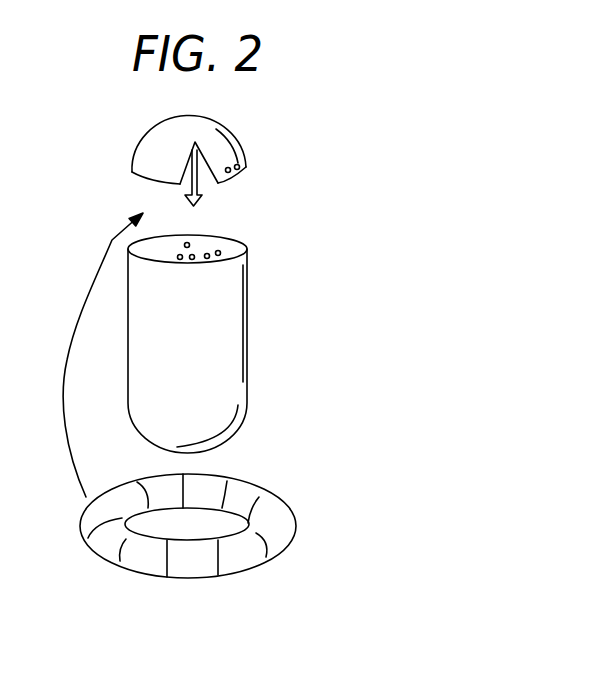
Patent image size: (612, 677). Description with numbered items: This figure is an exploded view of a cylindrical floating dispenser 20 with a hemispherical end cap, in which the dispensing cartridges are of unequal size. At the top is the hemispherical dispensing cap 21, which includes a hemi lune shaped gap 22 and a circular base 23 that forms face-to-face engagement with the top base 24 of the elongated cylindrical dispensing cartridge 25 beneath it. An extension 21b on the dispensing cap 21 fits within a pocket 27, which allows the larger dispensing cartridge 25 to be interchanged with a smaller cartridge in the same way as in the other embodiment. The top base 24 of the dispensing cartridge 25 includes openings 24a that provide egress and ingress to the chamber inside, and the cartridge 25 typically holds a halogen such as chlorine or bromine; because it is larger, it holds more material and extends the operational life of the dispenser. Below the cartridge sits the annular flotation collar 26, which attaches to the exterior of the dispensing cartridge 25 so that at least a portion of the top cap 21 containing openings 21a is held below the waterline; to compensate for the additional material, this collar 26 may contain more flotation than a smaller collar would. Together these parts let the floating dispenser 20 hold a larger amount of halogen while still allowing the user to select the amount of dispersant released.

The floating dispenser 20 is at (322, 138).
The top hemispherical dispensing cap 21 is at (233, 133).
The openings 21a is at (246, 166).
The extension 21b is at (183, 187).
The hemi lune shaped gap 22 is at (189, 167).
The circular base 23 is at (229, 173).
The top base 24 is at (207, 243).
The openings 24a is at (209, 257).
The elongated cylindrical dispensing cartridge 25 is at (247, 329).
The flotation collar 26 is at (250, 497).
The pocket 27 is at (100, 349).